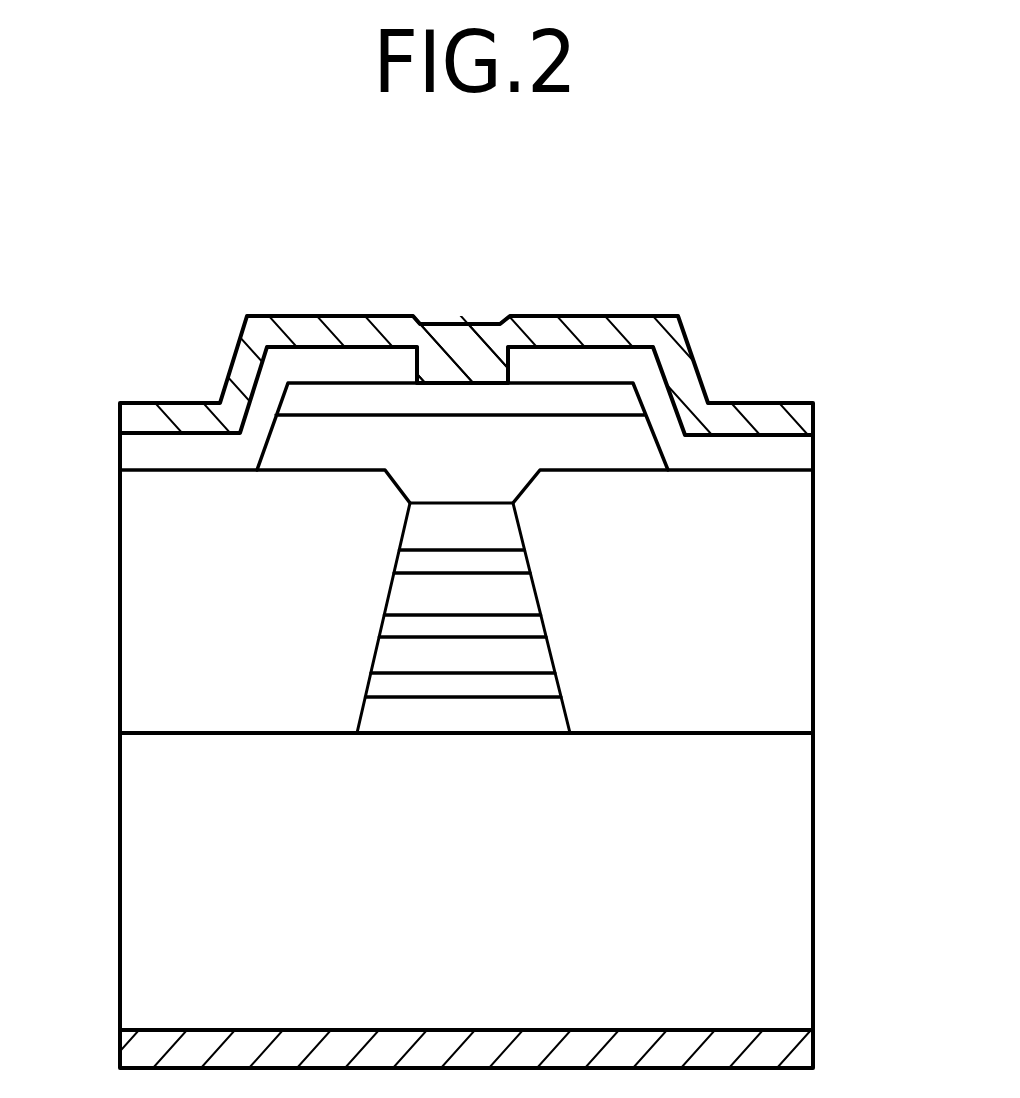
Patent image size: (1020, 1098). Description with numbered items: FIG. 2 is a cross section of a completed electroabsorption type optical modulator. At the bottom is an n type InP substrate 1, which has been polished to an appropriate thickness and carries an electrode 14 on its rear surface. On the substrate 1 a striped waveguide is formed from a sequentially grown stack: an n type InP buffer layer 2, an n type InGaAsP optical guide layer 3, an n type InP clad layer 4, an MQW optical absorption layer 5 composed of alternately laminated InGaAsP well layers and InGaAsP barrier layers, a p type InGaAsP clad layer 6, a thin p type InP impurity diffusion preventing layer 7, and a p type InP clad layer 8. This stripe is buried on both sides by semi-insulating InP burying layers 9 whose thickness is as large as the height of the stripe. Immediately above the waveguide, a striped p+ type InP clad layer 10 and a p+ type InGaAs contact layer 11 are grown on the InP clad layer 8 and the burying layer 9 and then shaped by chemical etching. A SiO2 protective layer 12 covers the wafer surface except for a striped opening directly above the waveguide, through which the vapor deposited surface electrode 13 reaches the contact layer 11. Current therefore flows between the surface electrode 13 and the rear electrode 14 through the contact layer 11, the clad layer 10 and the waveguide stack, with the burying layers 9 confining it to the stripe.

The InP substrate 1 is at (793, 887).
The InP buffer layer 2 is at (555, 720).
The InGaAsP optical guide layer 3 is at (548, 685).
The InP clad layer 4 is at (537, 657).
The MQW optical absorption layer 5 is at (533, 625).
The InGaAsP clad layer 6 is at (515, 597).
The impurity diffusion preventing layer 7 is at (508, 563).
The InP clad layer 8 is at (508, 528).
The semi-insulating InP burying layer 9 is at (148, 672).
The p+ type InP clad layer 10 is at (642, 433).
The p+ type InGaAs contact layer 11 is at (468, 393).
The SiO2 protective layer 12 is at (317, 360).
The surface electrode 13 is at (178, 415).
The electrode 14 is at (807, 1050).